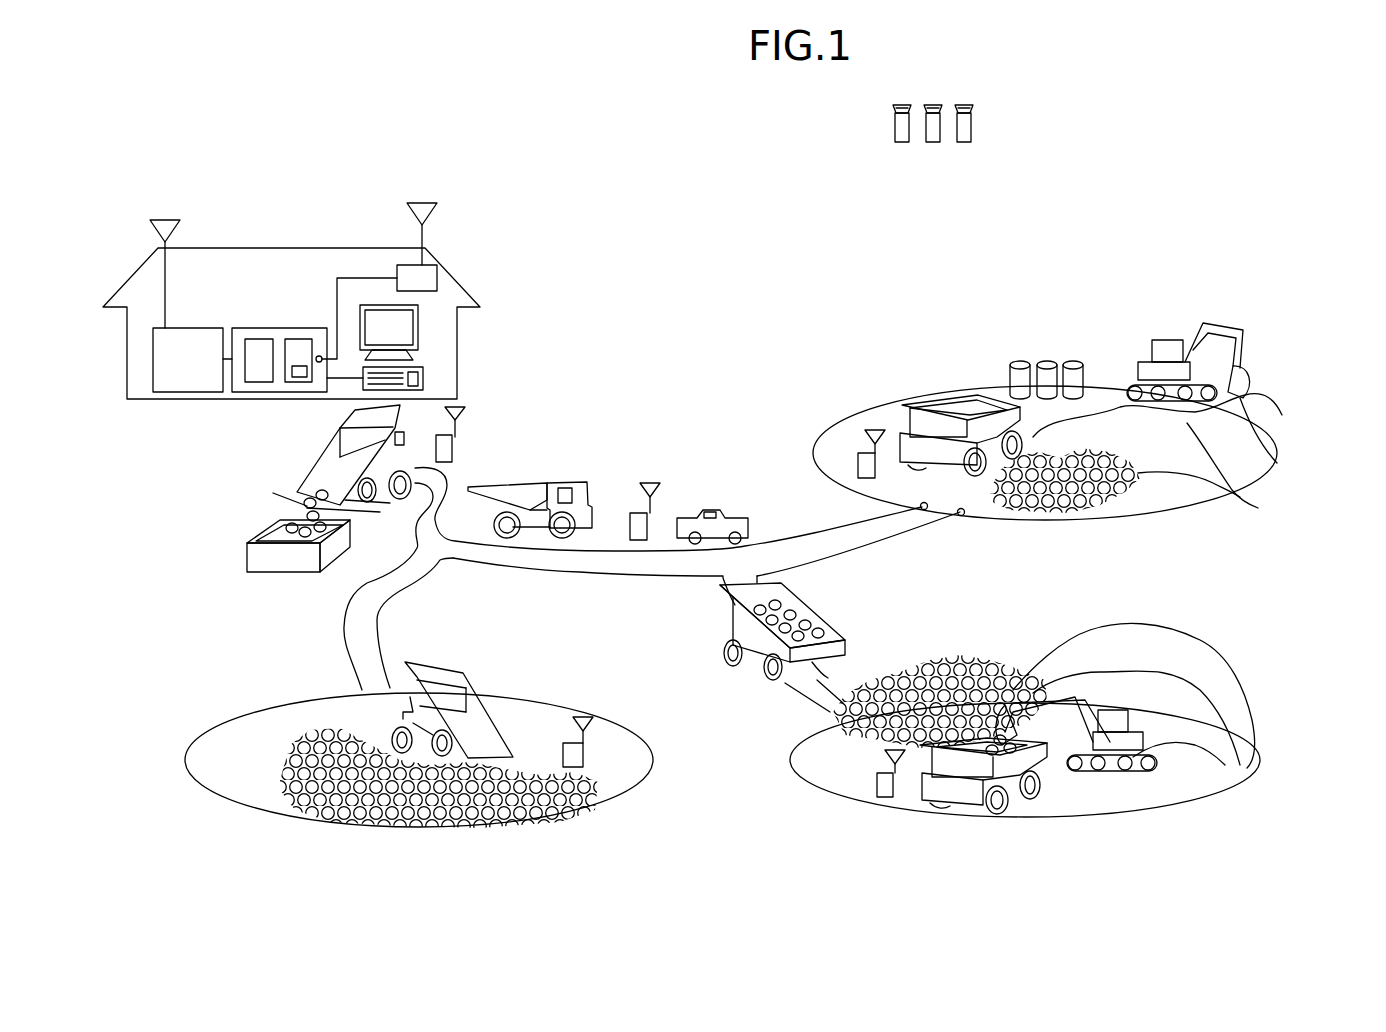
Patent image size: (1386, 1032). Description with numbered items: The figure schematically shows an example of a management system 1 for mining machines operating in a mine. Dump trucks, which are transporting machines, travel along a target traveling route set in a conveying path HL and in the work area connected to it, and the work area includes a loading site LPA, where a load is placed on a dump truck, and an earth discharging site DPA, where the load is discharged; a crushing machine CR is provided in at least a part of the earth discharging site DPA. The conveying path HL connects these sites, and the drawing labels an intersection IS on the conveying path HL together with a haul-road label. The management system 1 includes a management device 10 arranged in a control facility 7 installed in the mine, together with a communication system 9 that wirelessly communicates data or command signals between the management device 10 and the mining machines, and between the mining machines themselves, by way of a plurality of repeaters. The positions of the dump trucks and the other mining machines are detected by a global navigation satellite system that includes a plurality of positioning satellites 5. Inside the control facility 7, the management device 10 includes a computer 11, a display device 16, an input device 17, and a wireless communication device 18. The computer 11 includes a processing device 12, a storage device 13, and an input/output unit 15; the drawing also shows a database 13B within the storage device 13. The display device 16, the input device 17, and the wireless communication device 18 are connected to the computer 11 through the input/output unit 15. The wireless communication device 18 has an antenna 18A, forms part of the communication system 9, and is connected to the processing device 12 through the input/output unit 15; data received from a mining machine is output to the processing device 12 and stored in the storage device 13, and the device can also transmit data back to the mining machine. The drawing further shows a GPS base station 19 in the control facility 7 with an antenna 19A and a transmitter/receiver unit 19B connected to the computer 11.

The management system 1 is at (1084, 196).
The positioning satellite 5 is at (902, 142).
The control facility 7 is at (340, 244).
The communication system 9 is at (600, 242).
The management device 10 is at (302, 262).
The computer 11 is at (278, 320).
The processing device 12 is at (262, 339).
The storage device 13 is at (300, 339).
The database 13B is at (290, 371).
The input/output unit 15 is at (320, 355).
The display device 16 is at (418, 325).
The input device 17 is at (423, 376).
The wireless communication device 18 is at (407, 265).
The antenna 18A is at (423, 203).
The GPS base station 19 is at (186, 392).
The GPS base station antenna 19A is at (167, 275).
The GPS base station transmitter/receiver 19B is at (188, 342).
The conveying path HL is at (582, 572).
The intersection IS is at (443, 563).
The crushing machine CR is at (285, 572).
The earth discharging site DPA is at (236, 553).
The loading site LPA is at (1366, 392).